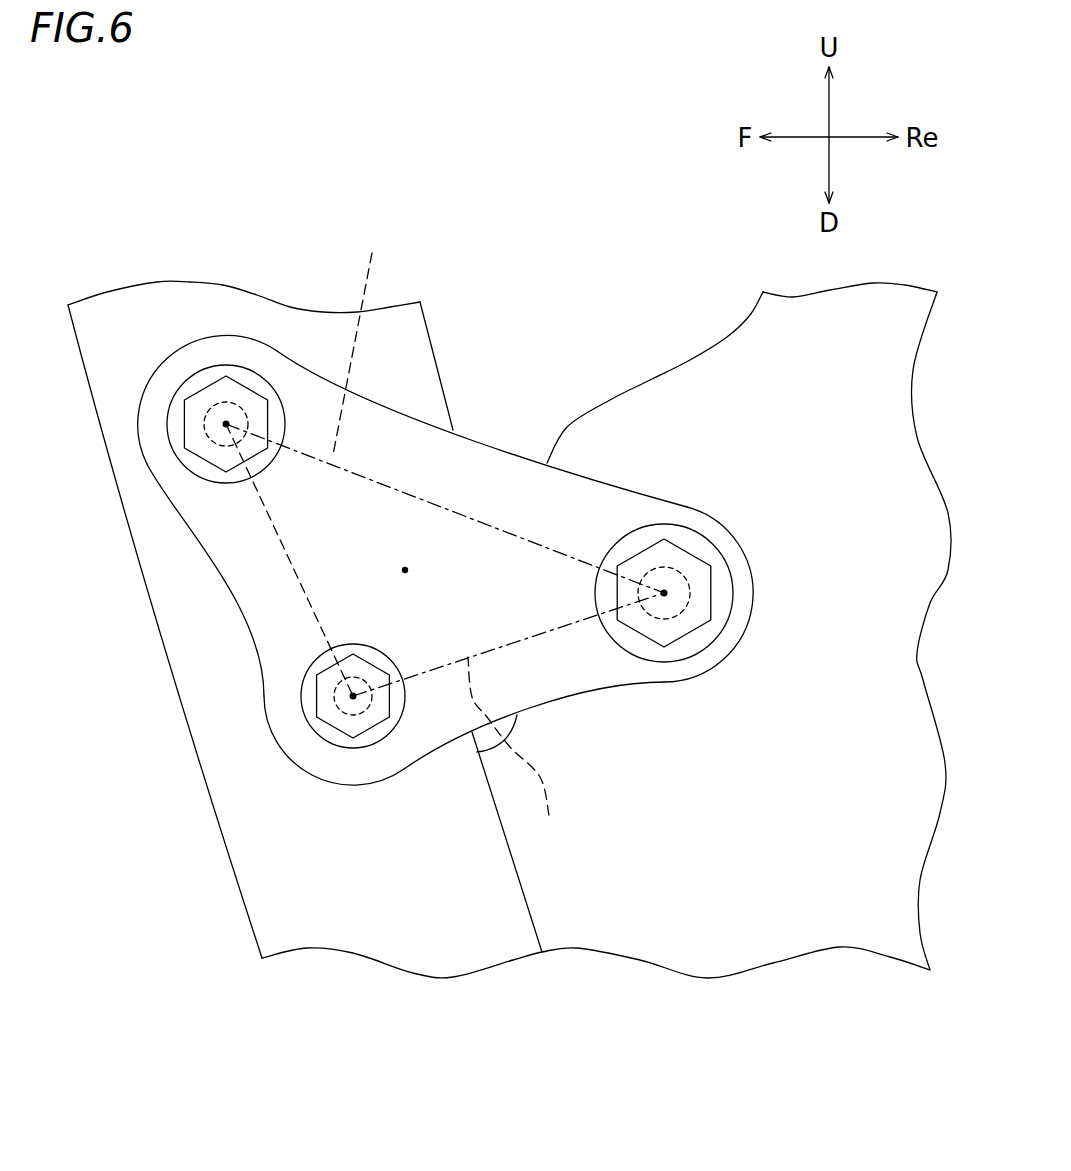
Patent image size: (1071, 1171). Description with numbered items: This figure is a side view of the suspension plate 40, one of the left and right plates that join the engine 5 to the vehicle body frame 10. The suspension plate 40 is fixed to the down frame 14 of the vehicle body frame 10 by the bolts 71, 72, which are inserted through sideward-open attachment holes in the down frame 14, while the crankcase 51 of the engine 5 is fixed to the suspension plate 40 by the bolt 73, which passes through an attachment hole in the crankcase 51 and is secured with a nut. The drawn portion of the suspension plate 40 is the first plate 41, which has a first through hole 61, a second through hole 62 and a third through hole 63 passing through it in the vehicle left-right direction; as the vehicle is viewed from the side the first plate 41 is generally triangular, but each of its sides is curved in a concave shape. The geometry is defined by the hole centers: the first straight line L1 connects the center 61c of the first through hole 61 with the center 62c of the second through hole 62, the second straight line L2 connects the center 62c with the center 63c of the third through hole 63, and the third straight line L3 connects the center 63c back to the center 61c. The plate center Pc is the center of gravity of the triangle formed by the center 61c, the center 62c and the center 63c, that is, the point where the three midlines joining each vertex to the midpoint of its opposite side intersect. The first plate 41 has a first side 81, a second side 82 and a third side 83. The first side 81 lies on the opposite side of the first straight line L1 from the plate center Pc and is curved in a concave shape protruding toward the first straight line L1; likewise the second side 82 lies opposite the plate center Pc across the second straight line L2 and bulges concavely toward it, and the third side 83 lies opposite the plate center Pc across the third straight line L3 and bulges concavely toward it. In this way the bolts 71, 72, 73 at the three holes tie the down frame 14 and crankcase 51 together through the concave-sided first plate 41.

The engine 5 is at (708, 350).
The vehicle body frame 10 is at (238, 892).
The down frame 14 is at (217, 828).
The suspension plate 40 is at (302, 362).
The first plate 41 is at (457, 473).
The crankcase 51 is at (655, 378).
The first through hole 61 is at (187, 413).
The center of the first through hole 61c is at (226, 424).
The second through hole 62 is at (335, 686).
The center of the second through hole 62c is at (353, 696).
The third through hole 63 is at (668, 567).
The center of the third through hole 63c is at (664, 593).
The bolt 71 is at (213, 400).
The bolt 72 is at (353, 723).
The bolt 73 is at (700, 587).
The first side 81 is at (233, 558).
The second side 82 is at (567, 700).
The third side 83 is at (485, 447).
The first straight line L1 is at (293, 572).
The second straight line L2 is at (516, 753).
The third straight line L3 is at (359, 336).
The plate center Pc is at (425, 573).